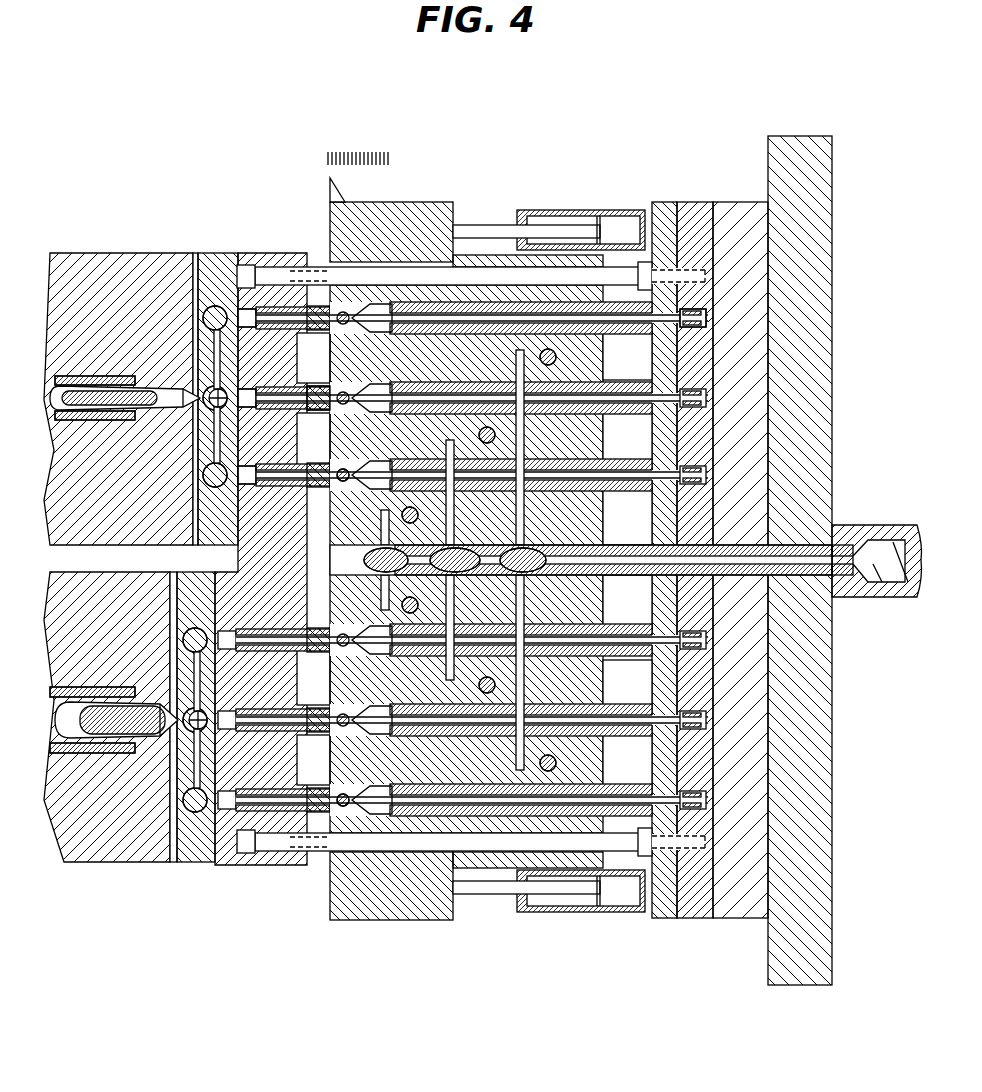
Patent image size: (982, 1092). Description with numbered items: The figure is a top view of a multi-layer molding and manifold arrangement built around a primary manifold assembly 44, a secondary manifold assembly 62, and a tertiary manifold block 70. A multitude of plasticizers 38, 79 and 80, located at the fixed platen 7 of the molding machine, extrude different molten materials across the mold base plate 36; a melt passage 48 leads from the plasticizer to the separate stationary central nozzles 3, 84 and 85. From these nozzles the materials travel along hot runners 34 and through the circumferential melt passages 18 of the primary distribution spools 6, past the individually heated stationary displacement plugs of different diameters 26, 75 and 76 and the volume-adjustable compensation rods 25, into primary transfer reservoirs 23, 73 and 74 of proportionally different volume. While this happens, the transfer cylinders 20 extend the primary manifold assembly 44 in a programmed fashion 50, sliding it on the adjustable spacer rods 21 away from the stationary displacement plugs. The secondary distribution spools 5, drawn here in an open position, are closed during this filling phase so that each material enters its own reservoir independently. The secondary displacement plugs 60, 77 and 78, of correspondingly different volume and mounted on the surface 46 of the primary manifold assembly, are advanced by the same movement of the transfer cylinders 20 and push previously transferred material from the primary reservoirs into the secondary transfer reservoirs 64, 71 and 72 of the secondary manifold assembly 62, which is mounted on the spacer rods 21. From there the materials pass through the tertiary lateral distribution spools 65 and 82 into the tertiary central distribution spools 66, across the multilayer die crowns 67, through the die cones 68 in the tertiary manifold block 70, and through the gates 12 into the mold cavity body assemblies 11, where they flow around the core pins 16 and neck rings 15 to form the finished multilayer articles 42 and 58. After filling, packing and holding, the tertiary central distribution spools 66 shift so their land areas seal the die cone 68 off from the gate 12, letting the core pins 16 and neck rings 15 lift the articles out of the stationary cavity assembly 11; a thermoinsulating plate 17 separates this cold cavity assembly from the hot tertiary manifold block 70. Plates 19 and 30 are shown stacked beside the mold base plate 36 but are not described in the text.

The stationary center nozzle 3 is at (575, 545).
The secondary distribution spool 5 is at (335, 470).
The primary distribution spool 6 is at (557, 357).
The fixed platen 7 is at (783, 137).
The mold cavity body assembly 11 is at (112, 254).
The gate 12 is at (208, 392).
The neck ring 15 is at (113, 557).
The core pin 16 is at (92, 564).
The thermoinsulating plate 17 is at (195, 254).
The circumferential melt passage 18 is at (373, 470).
The back plate 19 is at (660, 203).
The transfer cylinder 20 is at (582, 211).
The adjustable spacer rod 21 is at (372, 270).
The primary transfer reservoir 23 is at (380, 385).
The compensation rod 25 is at (693, 327).
The stationary displacement plug 26 is at (620, 415).
The spacer plate 30 is at (697, 203).
The main hot runner 34 is at (515, 357).
The mold base plate 36 is at (740, 203).
The plasticizer 38 is at (840, 524).
The finished multilayer article 42 is at (160, 420).
The primary manifold assembly 44 is at (420, 203).
The surface of the primary manifold assembly 46 is at (330, 910).
The melt passage 48 is at (526, 433).
The programmed fashion 50 is at (362, 150).
The finished multilayer article 58 is at (90, 782).
The secondary displacement plug 60 is at (292, 465).
The secondary manifold assembly 62 is at (268, 254).
The secondary transfer reservoir 64 is at (290, 330).
The tertiary lateral distribution spool 65 is at (205, 485).
The tertiary central distribution spool 66 is at (268, 465).
The multilayer die crown 67 is at (188, 450).
The die cone 68 is at (214, 360).
The tertiary manifold block 70 is at (218, 254).
The secondary transfer reservoir 71 is at (250, 495).
The secondary transfer reservoir 72 is at (250, 330).
The primary transfer reservoir 73 is at (380, 465).
The primary transfer reservoir 74 is at (365, 335).
The stationary displacement plug 75 is at (620, 495).
The stationary displacement plug 76 is at (620, 338).
The secondary displacement plug 77 is at (283, 495).
The secondary displacement plug 78 is at (245, 306).
The plasticizer 79 is at (875, 524).
The plasticizer 80 is at (914, 524).
The tertiary lateral distribution spool 82 is at (205, 316).
The stationary central nozzle 84 is at (462, 542).
The stationary central nozzle 85 is at (416, 510).